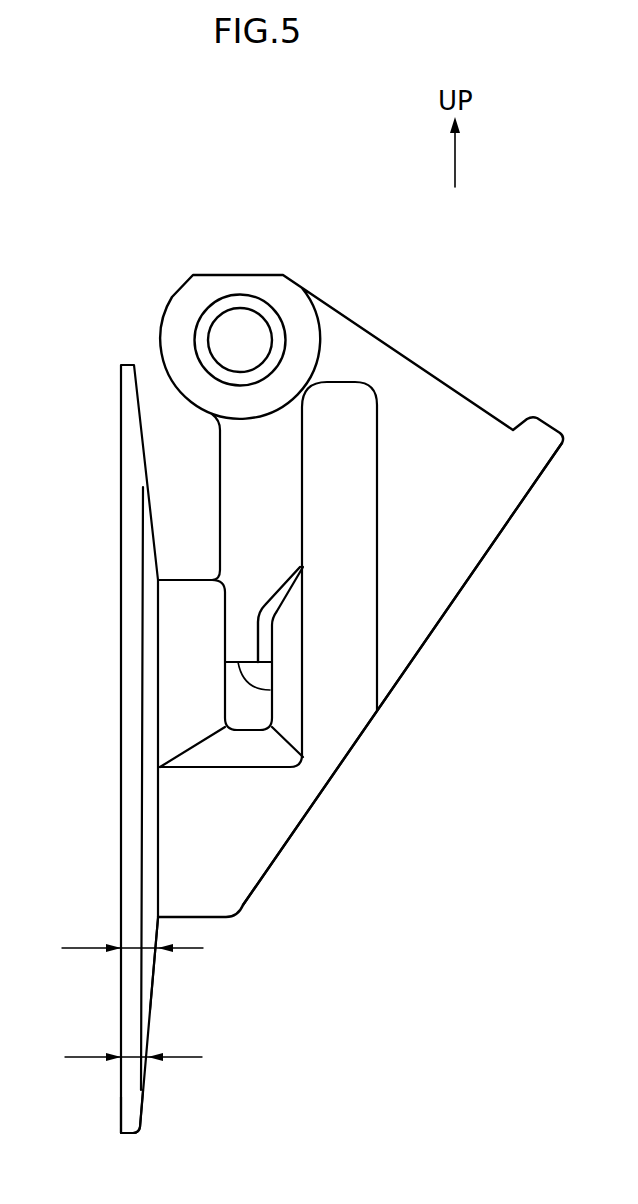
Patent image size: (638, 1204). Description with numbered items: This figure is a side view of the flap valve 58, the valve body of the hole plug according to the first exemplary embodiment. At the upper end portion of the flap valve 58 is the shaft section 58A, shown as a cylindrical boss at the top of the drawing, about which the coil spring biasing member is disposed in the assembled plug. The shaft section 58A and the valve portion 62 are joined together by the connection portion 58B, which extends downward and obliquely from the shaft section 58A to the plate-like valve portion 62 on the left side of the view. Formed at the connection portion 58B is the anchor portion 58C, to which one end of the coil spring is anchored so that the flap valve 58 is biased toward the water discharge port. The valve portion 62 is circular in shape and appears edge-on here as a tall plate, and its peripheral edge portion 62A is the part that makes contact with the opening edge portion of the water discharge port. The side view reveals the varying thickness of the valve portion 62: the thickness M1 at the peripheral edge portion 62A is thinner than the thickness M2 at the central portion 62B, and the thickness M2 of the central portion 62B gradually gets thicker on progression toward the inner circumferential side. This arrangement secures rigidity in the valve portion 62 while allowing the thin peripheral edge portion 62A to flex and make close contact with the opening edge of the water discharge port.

The flap valve 58 is at (472, 352).
The shaft section 58A is at (282, 320).
The connection portion 58B is at (473, 571).
The anchor portion 58C is at (238, 662).
The valve portion 62 is at (107, 837).
The peripheral edge portion 62A is at (122, 1097).
The central portion 62B is at (158, 932).
The thickness of the peripheral edge portion M1 is at (137, 1057).
The thickness of the central portion M2 is at (135, 947).